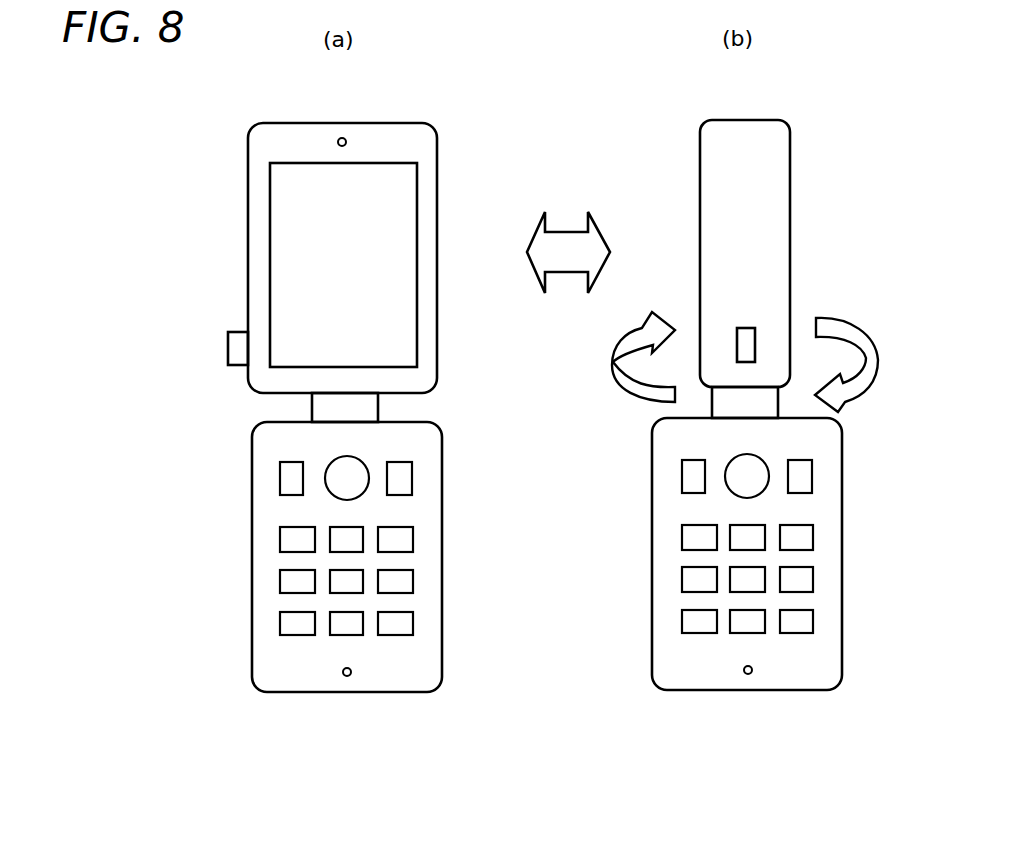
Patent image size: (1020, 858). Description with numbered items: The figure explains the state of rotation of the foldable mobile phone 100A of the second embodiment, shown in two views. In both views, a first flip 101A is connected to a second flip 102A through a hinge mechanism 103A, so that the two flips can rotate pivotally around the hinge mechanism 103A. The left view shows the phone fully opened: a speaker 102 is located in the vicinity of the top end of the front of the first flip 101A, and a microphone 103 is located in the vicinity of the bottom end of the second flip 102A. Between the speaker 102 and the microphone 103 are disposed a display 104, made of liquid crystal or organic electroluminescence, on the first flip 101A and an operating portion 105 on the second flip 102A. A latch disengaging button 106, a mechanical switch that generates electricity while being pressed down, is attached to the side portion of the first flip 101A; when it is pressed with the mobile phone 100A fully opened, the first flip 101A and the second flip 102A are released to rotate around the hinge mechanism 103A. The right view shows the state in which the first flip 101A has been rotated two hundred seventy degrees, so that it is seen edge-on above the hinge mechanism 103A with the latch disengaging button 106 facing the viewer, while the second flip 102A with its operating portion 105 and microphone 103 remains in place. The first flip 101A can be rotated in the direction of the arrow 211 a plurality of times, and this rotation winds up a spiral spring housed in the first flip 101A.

The mobile phone 100A is at (534, 408).
The first flip 101A is at (248, 224).
The speaker 102 is at (344, 137).
The second flip 102A is at (252, 521).
The microphone 103 is at (349, 676).
The hinge mechanism 103A is at (378, 409).
The display 104 is at (393, 268).
The operating portion 105 is at (427, 515).
The latch disengaging button 106 is at (228, 348).
The arrow 211 is at (860, 326).